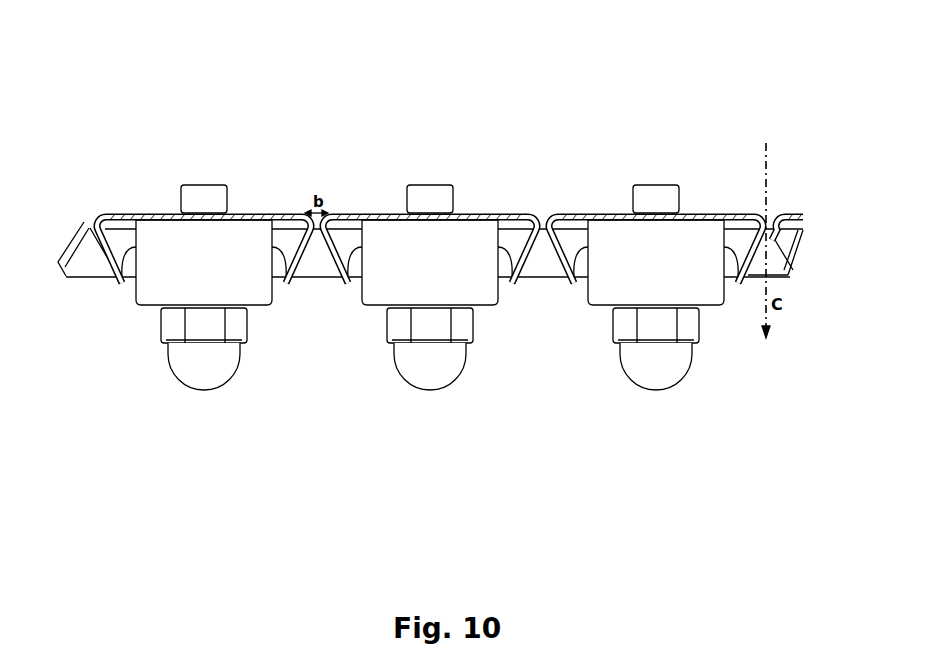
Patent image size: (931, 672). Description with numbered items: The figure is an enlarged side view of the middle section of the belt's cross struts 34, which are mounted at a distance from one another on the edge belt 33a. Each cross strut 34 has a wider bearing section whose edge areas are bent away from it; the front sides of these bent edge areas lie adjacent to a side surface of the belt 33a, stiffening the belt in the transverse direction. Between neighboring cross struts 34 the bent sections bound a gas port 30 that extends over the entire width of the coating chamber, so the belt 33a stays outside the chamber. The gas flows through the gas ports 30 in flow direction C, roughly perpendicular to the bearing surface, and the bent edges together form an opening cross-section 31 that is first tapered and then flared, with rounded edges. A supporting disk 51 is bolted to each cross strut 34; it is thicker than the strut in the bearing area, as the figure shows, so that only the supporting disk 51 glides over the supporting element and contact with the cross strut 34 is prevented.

The gas port 30 is at (313, 184).
The opening cross-section 31 is at (315, 263).
The belt 33a is at (543, 263).
The cross strut 34 is at (508, 220).
The supporting disk 51 is at (193, 203).